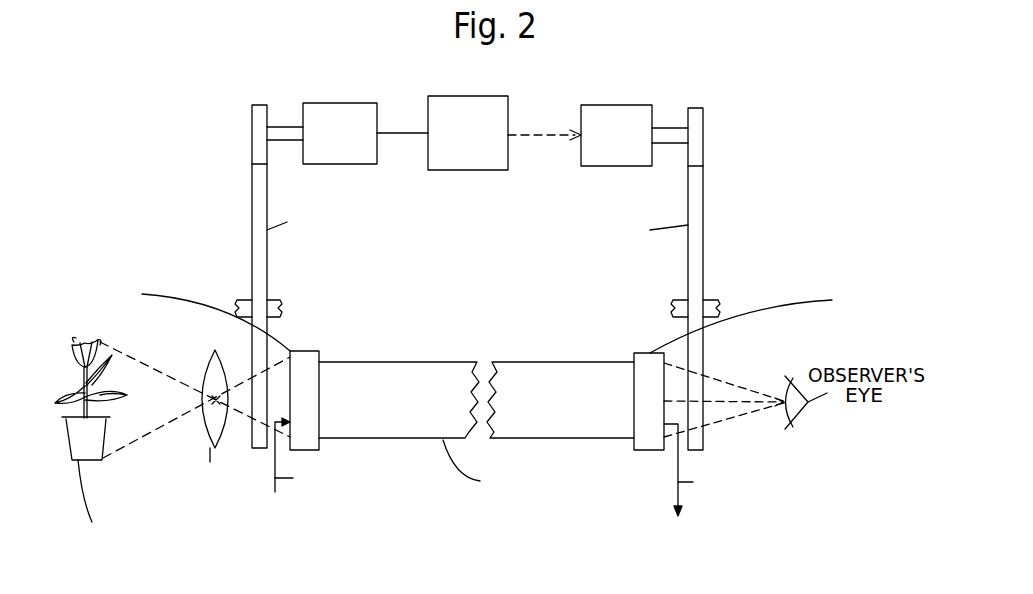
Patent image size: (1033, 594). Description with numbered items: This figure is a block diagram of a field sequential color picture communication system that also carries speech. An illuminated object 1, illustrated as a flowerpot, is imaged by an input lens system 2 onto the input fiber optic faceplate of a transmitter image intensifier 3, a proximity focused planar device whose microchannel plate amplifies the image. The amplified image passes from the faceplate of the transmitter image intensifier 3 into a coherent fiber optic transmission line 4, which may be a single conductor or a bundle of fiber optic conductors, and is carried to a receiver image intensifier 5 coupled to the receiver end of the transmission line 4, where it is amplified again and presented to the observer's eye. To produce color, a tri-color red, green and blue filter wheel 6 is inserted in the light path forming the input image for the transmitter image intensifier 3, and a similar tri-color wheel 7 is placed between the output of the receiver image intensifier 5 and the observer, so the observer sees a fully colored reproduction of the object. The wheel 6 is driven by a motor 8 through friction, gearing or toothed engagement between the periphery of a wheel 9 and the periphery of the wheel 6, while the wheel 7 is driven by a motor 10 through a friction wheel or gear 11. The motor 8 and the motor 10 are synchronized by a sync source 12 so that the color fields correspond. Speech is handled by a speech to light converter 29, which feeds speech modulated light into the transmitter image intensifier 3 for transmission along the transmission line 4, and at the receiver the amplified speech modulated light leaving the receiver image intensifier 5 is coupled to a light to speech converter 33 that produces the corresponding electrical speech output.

The illuminated object 1 is at (107, 435).
The input lens system 2 is at (195, 433).
The transmitter image intensifier 3 is at (311, 350).
The coherent fiber optic transmission line 4 is at (398, 440).
The receiver image intensifier 5 is at (650, 353).
The tri-color filter wheel 6 is at (267, 277).
The tri-color wheel 7 is at (688, 270).
The motor 8 is at (330, 103).
The wheel 9 is at (252, 126).
The motor 10 is at (608, 104).
The friction wheel or gear 11 is at (703, 127).
The sync source 12 is at (476, 95).
The speech to light converter 29 is at (343, 475).
The light to speech converter 33 is at (757, 470).